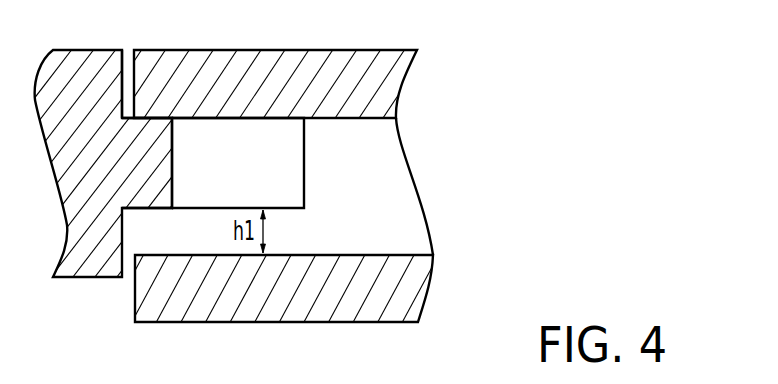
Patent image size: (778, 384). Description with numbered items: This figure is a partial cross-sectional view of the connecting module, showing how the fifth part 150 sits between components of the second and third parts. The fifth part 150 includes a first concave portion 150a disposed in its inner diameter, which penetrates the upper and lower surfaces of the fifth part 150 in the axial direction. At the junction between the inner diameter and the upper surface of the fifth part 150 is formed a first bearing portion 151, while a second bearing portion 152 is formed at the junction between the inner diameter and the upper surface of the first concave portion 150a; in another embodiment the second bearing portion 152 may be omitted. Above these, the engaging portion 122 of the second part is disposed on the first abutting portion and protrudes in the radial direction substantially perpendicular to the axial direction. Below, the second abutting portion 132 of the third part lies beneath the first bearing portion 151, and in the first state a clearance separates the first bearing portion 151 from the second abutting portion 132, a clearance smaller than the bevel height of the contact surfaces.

The fifth part 150 is at (92, 48).
The first concave portion 150a is at (130, 63).
The second bearing portion 152 is at (152, 137).
The first bearing portion 151 is at (258, 135).
The engaging portion 122 is at (362, 67).
The second abutting portion 132 is at (305, 305).